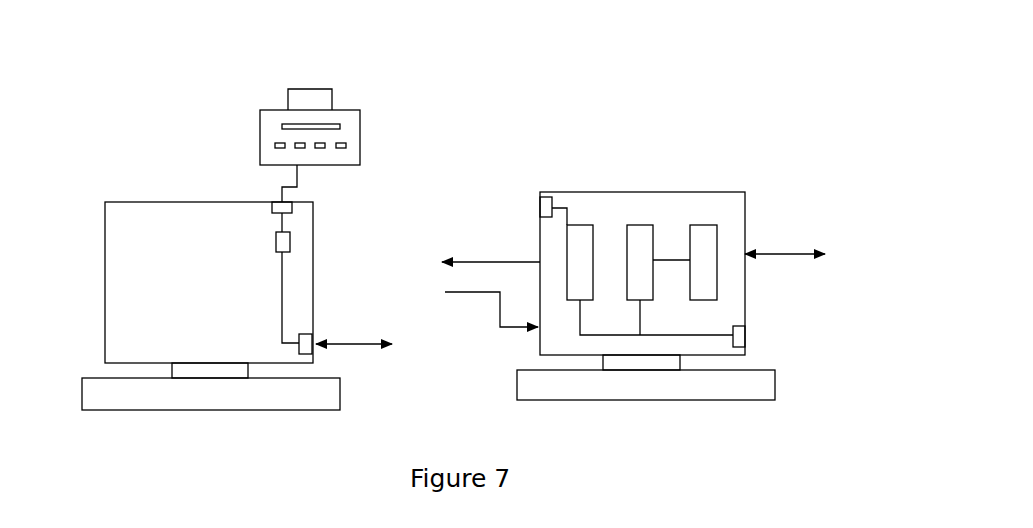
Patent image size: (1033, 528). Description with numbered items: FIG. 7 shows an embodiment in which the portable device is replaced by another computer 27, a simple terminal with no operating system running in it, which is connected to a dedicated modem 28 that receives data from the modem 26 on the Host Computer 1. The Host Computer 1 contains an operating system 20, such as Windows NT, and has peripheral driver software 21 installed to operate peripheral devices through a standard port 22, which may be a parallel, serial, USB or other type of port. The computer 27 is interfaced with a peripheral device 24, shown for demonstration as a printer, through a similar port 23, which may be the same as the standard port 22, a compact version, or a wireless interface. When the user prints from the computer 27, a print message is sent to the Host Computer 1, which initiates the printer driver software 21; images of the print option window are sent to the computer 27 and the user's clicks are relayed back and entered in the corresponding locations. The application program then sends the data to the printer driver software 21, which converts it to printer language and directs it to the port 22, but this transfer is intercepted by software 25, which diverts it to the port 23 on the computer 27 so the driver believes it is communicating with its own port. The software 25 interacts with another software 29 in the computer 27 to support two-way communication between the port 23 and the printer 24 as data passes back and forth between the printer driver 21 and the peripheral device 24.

The Host Computer 1 is at (680, 393).
The operating system 20 is at (710, 225).
The peripheral driver software 21 is at (638, 227).
The standard port 22 is at (745, 328).
The port 23 is at (270, 200).
The peripheral device 24 is at (360, 130).
The software 25 is at (580, 225).
The modem 26 is at (548, 197).
The computer 27 is at (245, 400).
The dedicated modem 28 is at (312, 334).
The software 29 is at (290, 240).